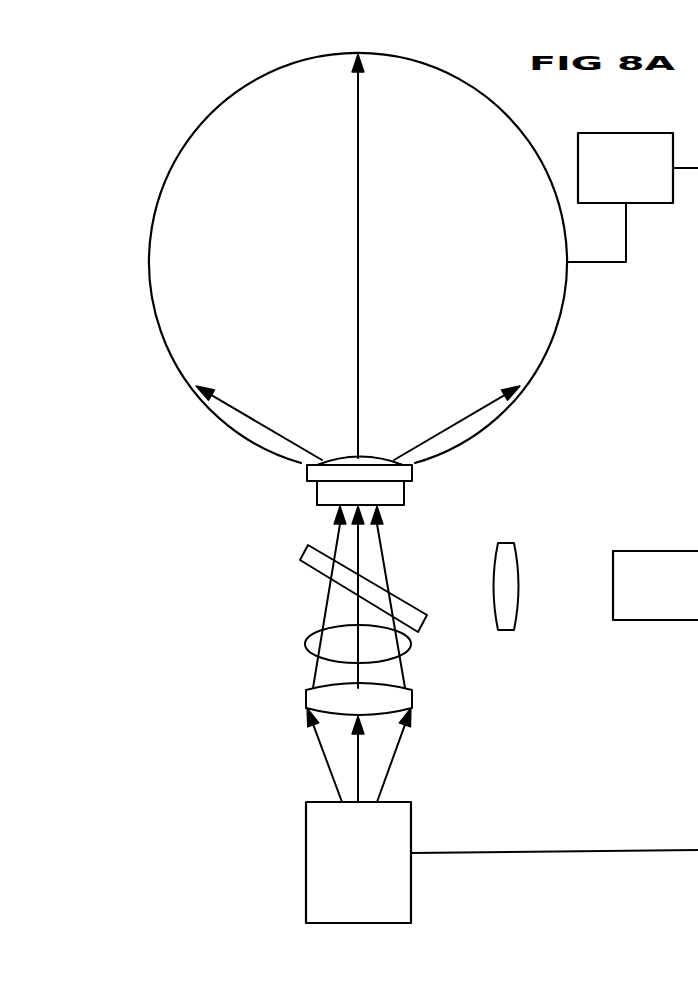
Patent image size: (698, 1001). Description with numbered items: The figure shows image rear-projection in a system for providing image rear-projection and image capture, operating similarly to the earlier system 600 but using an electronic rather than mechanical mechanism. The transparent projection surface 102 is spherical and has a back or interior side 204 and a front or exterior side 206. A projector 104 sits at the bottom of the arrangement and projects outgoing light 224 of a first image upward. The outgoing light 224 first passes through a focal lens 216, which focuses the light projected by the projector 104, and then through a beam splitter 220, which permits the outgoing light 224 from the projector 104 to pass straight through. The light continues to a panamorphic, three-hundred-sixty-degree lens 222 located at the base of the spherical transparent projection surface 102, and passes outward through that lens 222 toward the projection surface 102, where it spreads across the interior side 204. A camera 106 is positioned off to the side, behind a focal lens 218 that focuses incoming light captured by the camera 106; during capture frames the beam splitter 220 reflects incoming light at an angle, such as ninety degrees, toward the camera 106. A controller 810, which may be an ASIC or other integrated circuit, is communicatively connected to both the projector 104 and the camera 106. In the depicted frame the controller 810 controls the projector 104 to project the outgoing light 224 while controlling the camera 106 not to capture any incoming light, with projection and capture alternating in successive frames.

The transparent projection surface 102 is at (159, 325).
The interior side 204 is at (219, 144).
The exterior side 206 is at (176, 131).
The panamorphic lens 222 is at (317, 497).
The beam splitter 220 is at (305, 549).
The outgoing light 224 is at (308, 642).
The focal lens 216 is at (306, 699).
The focal lens 218 is at (506, 543).
The projector 104 is at (306, 845).
The camera 106 is at (637, 621).
The controller 810 is at (638, 204).
The system 600 is at (191, 776).